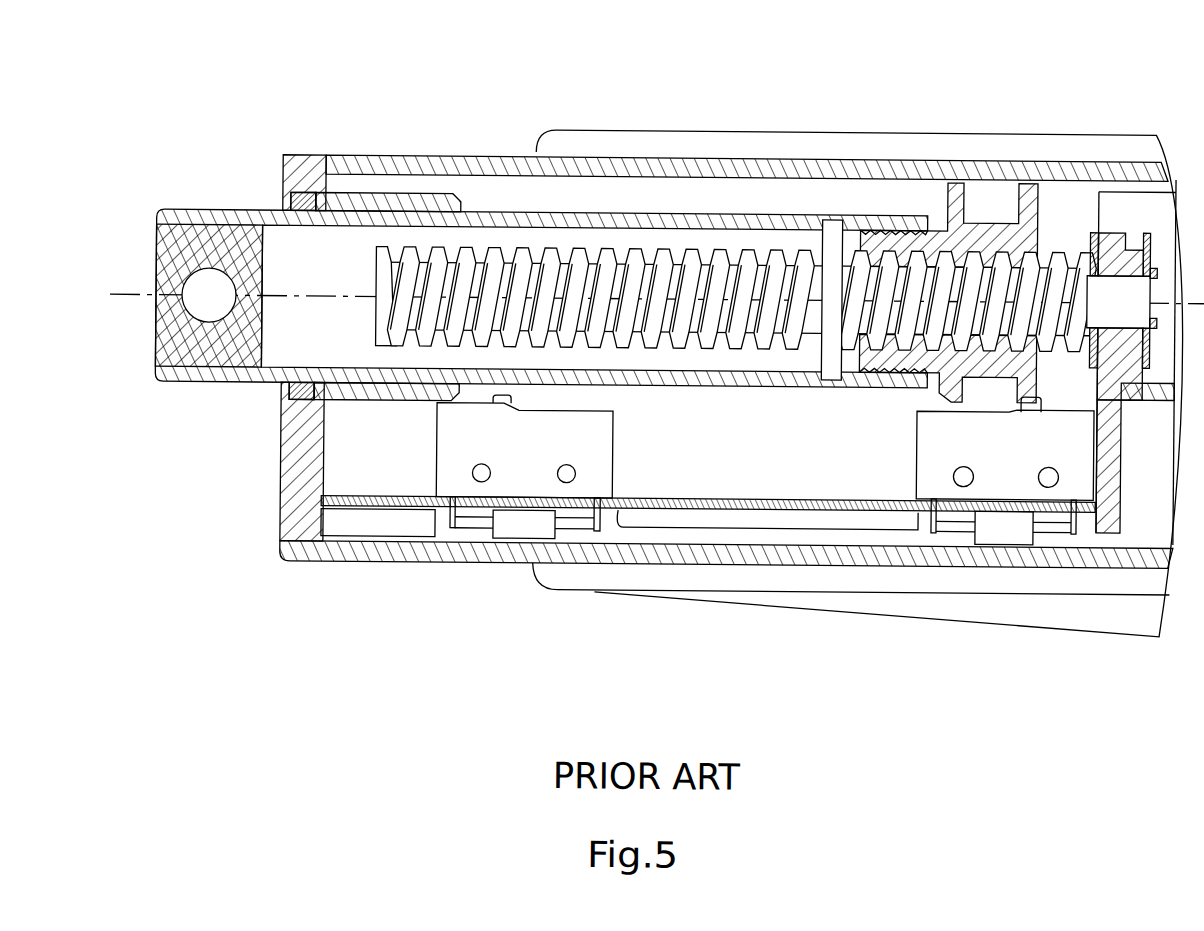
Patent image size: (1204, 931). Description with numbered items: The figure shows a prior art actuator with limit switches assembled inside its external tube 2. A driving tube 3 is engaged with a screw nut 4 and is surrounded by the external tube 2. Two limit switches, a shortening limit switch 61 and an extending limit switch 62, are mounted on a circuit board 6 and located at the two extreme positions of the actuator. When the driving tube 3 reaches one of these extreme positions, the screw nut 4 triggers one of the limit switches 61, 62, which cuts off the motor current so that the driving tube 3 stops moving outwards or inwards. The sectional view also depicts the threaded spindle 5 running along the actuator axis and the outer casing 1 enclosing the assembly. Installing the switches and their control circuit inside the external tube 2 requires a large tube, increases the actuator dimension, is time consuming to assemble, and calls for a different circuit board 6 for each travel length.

The outer casing 1 is at (862, 576).
The external tube 2 is at (706, 166).
The driving tube 3 is at (262, 388).
The screw nut 4 is at (996, 230).
The threaded spindle 5 is at (554, 262).
The circuit board 6 is at (737, 506).
The shortening limit switch 61 is at (1014, 426).
The extending limit switch 62 is at (488, 413).